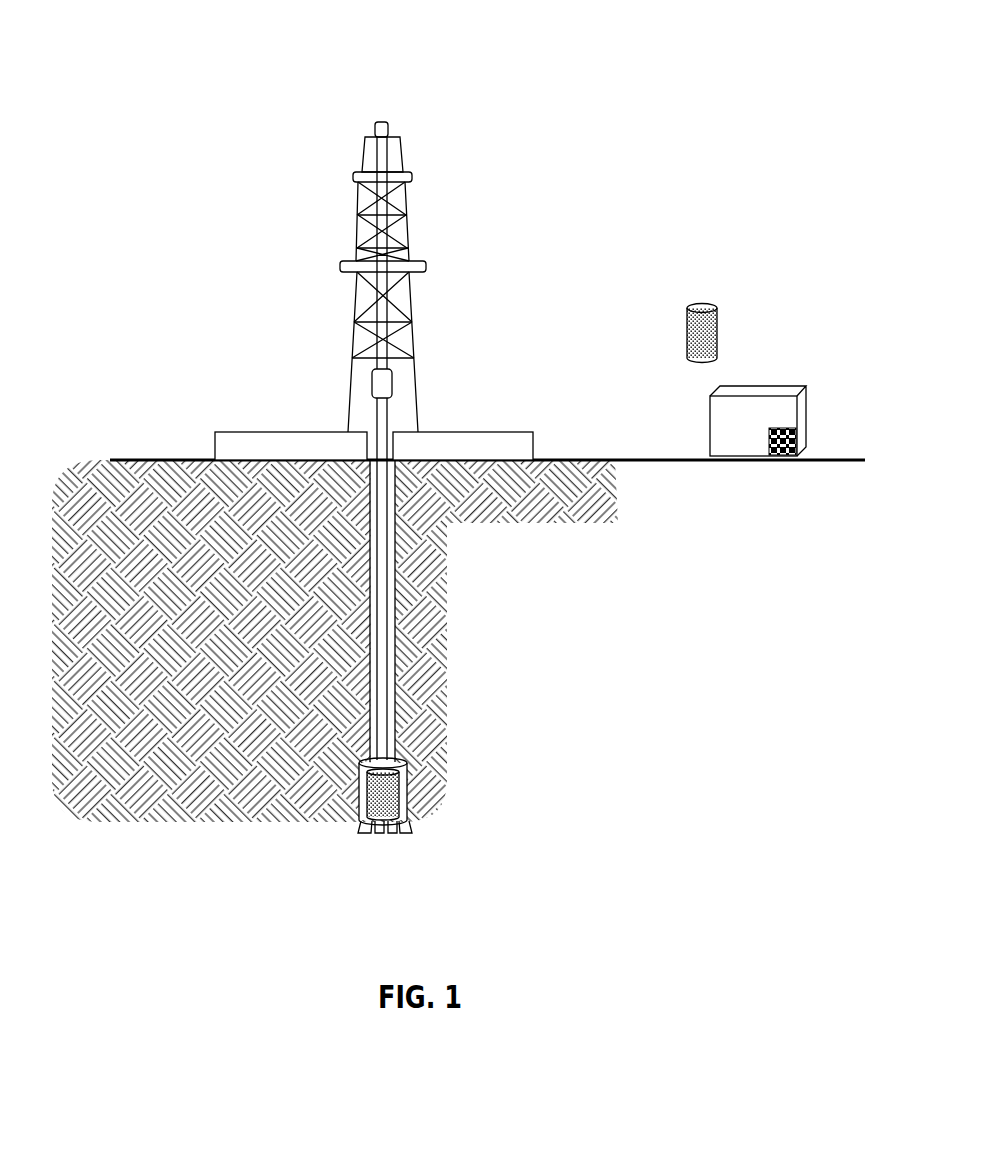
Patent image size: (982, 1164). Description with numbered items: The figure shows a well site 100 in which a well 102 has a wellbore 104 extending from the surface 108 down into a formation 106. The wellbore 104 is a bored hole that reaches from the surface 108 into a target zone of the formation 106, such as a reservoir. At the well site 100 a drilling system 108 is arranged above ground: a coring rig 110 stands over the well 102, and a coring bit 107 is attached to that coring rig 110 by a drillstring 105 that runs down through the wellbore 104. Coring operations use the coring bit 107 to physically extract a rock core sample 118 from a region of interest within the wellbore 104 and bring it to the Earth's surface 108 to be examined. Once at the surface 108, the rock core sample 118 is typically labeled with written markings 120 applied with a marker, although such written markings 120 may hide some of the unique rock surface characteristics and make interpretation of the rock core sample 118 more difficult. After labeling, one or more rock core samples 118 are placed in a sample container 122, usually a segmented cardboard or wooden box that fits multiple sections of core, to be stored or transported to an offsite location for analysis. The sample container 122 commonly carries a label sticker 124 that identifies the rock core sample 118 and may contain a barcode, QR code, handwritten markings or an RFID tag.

The well site 100 is at (236, 52).
The well 102 is at (365, 469).
The wellbore 104 is at (389, 682).
The drillstring 105 is at (384, 410).
The formation 106 is at (437, 525).
The coring bit 107 is at (359, 792).
The surface 108 is at (334, 288).
The coring rig 110 is at (386, 120).
The rock core sample 118 is at (763, 356).
The written markings 120 is at (691, 362).
The sample container 122 is at (813, 386).
The label sticker 124 is at (783, 458).